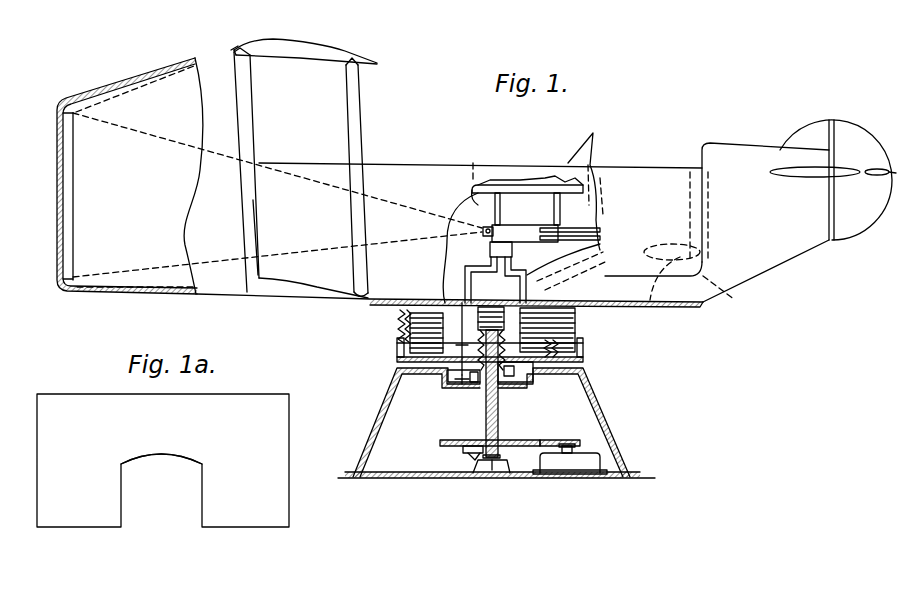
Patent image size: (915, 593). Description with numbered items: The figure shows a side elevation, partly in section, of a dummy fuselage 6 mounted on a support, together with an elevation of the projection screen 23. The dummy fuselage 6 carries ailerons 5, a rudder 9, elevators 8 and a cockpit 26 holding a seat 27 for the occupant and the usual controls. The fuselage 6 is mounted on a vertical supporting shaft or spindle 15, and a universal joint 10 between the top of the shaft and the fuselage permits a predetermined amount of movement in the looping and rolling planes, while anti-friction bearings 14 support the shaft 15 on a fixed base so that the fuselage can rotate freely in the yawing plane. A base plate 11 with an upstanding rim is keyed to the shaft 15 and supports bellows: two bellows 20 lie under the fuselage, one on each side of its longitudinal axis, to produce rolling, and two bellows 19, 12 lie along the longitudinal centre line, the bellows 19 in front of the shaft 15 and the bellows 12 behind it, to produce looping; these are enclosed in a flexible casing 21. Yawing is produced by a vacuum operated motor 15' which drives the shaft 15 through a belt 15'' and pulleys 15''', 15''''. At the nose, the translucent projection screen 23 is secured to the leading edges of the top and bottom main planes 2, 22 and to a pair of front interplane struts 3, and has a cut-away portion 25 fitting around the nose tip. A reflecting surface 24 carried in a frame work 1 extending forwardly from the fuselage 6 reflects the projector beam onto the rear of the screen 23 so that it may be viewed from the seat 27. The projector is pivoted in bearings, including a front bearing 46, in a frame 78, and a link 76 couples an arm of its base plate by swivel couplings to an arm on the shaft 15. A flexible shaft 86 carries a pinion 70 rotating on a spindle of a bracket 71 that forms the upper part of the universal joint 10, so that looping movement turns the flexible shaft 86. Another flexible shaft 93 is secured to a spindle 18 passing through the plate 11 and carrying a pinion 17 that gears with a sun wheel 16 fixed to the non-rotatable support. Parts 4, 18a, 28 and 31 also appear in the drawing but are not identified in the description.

In FIG. 1, the frame work 1 is at (205, 83).
In FIG. 1, the top main plane 2 is at (298, 53).
In FIG. 1, the front interplane struts 3 is at (247, 100).
In FIG. 1, the strut 4 is at (352, 89).
In FIG. 1, the ailerons 5 is at (373, 305).
In FIG. 1, the dummy fuselage 6 is at (380, 170).
In FIG. 1, the elevators 8 is at (868, 175).
In FIG. 1, the rudder 9 is at (848, 220).
In FIG. 1, the universal joint 10 is at (578, 318).
In FIG. 1, the base plate 11 is at (560, 345).
In FIG. 1, the bellows 12 is at (550, 355).
In FIG. 1, the anti-friction bearings 14 is at (510, 388).
In FIG. 1, the vertical supporting shaft 15 is at (501, 382).
In FIG. 1, the vacuum operated motor 15' is at (570, 480).
In FIG. 1, the belt 15'' is at (569, 428).
In FIG. 1, the pulley 15''' is at (606, 431).
In FIG. 1, the pulley 15'''' is at (461, 459).
In FIG. 1, the sun wheel 16 is at (473, 387).
In FIG. 1, the pinion 17 is at (456, 383).
In FIG. 1, the spindle 18 is at (450, 373).
In FIG. 1, the cover plate 18a is at (517, 190).
In FIG. 1, the bellows 19 is at (397, 362).
In FIG. 1, the bellows 20 is at (420, 343).
In FIG. 1, the flexible casing 21 is at (400, 321).
In FIG. 1, the bottom main plane 22 is at (317, 288).
In FIG. 1, the projection screen 23 is at (244, 231).
In FIG. 1A, the projection screen 23 is at (88, 528).
In FIG. 1, the reflecting surface 24 is at (73, 193).
In FIG. 1A, the cut-away portion 25 is at (202, 480).
In FIG. 1, the cockpit 26 is at (650, 188).
In FIG. 1, the seat 27 is at (413, 222).
In FIG. 1, the housing 28 is at (562, 200).
In FIG. 1, the pivot plates 31 is at (481, 228).
In FIG. 1, the bearing 46 is at (498, 231).
In FIG. 1, the pinion 70 is at (563, 266).
In FIG. 1, the bracket 71 is at (571, 276).
In FIG. 1, the link 76 is at (489, 255).
In FIG. 1, the frame 78 is at (472, 187).
In FIG. 1, the flexible shaft 86 is at (503, 272).
In FIG. 1, the flexible shaft 93 is at (464, 288).